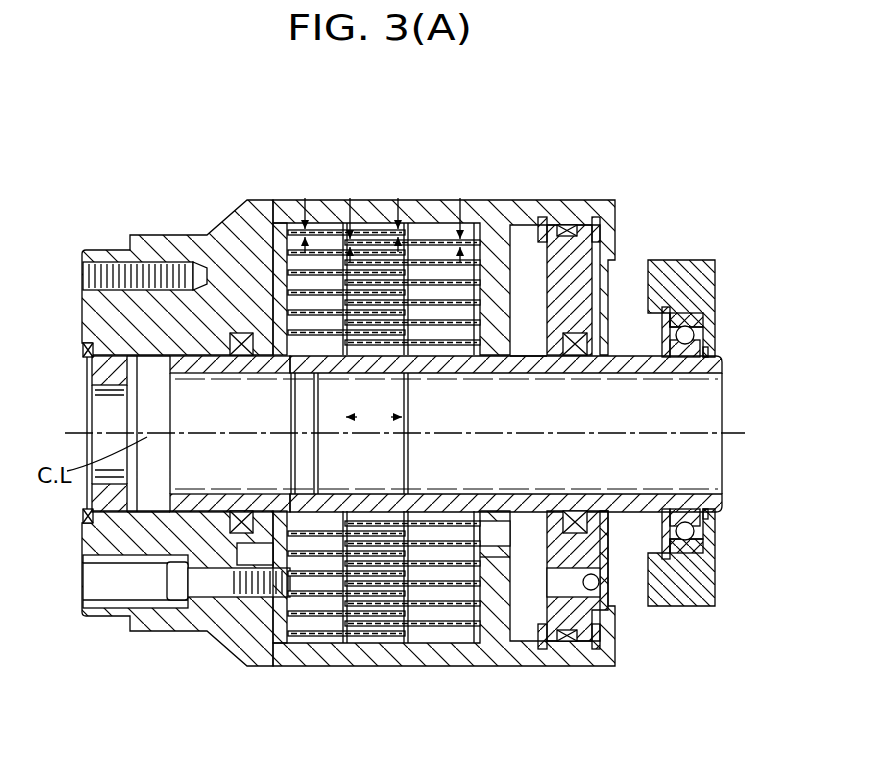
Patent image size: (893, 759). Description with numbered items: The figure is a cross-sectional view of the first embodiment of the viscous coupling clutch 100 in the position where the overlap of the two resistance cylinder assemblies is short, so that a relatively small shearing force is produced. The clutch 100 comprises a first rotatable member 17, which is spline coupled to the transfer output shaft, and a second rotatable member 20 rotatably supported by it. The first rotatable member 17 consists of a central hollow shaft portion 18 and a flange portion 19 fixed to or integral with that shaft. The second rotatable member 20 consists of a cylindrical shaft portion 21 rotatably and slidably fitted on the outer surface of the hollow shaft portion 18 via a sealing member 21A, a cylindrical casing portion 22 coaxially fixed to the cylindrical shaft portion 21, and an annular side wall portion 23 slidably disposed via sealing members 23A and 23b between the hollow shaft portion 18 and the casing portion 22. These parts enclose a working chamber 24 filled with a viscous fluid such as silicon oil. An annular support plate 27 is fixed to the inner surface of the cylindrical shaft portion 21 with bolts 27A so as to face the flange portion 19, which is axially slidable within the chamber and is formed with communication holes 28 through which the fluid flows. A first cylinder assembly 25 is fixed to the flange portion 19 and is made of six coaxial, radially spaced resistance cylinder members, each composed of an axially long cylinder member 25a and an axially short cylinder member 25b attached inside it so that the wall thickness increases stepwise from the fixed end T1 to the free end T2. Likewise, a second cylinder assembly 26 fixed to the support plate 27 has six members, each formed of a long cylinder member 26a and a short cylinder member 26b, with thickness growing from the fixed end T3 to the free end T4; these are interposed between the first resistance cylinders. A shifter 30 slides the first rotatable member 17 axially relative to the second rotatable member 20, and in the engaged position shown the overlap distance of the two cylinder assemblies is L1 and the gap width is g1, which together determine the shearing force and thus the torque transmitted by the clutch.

The viscous coupling clutch 100 is at (645, 197).
The first rotatable member 17 is at (448, 434).
The central hollow shaft portion 18 is at (531, 360).
The flange portion 19 is at (533, 225).
The second rotatable member 20 is at (444, 381).
The cylindrical shaft portion 21 is at (172, 239).
The sealing member 21A is at (244, 373).
The cylindrical casing portion 22 is at (503, 222).
The annular side wall portion 23 is at (600, 396).
The sealing member 23A is at (573, 358).
The sealing member 23b is at (565, 230).
The working chamber 24 is at (435, 332).
The first cylinder assembly 25 is at (494, 383).
The axially long cylinder member 25a is at (420, 238).
The axially short cylinder member 25b is at (478, 238).
The second cylinder assembly 26 is at (414, 352).
The axially long cylinder member 26a is at (364, 230).
The axially short cylinder member 26b is at (320, 230).
The annular support plate 27 is at (275, 228).
The bolts 27A is at (207, 583).
The communication holes 28 is at (495, 527).
The shifter 30 is at (689, 265).
The radial wall thickness at fixed end T1 is at (473, 218).
The radial wall thickness at free end T2 is at (350, 218).
The radial wall thickness at fixed end T3 is at (288, 213).
The radial wall thickness at free end T4 is at (411, 213).
The gap width g1 is at (393, 320).
The overlap distance L1 is at (374, 419).